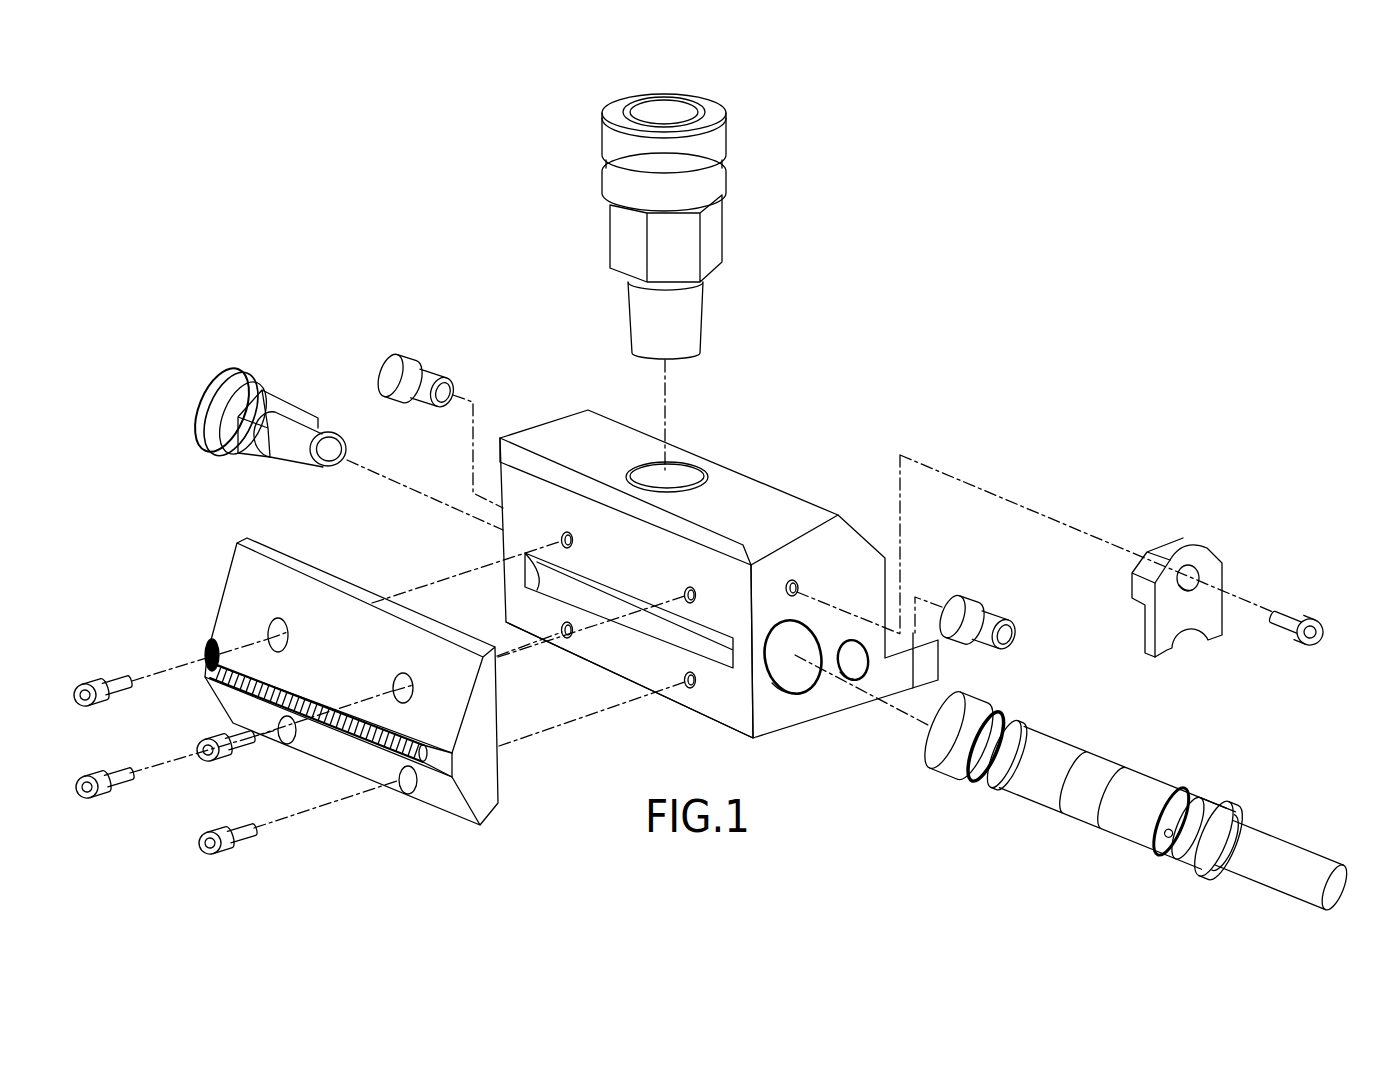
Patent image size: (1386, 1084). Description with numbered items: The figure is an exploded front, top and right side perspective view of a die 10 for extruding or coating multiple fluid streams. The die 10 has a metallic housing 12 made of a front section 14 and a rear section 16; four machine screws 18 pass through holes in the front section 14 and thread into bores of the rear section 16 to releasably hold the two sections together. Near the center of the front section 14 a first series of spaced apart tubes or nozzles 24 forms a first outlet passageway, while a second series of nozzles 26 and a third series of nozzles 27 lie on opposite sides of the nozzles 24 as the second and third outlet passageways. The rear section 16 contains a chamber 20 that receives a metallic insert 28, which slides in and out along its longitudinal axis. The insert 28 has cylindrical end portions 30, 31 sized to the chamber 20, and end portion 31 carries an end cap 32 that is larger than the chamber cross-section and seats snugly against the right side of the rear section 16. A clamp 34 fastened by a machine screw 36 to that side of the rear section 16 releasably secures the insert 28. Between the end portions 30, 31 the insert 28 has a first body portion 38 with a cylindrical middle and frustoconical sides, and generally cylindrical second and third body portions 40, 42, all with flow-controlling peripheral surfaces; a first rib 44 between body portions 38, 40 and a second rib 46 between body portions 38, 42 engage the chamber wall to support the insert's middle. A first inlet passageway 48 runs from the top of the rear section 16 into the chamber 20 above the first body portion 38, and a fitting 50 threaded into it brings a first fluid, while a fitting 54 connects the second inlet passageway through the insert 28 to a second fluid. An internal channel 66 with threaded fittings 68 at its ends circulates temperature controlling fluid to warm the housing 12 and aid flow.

The die 10 is at (926, 311).
The housing 12 is at (788, 484).
The front section 14 is at (487, 805).
The rear section 16 is at (740, 727).
The machine screws 18 is at (112, 763).
The chamber 20 is at (793, 693).
The first series of tubes or nozzles 24 is at (303, 710).
The second series of tubes or nozzles 26 is at (213, 668).
The third series of tubes or nozzles 27 is at (408, 743).
The insert 28 is at (1300, 840).
The end portion 30 is at (988, 700).
The end portion 31 is at (1213, 807).
The end cap 32 is at (1205, 858).
The clamp 34 is at (1145, 632).
The machine screw 36 is at (1295, 638).
The first body portion 38 is at (1047, 795).
The second body portion 40 is at (988, 757).
The third body portion 42 is at (1173, 823).
The first rib 44 is at (1033, 725).
The second rib 46 is at (1190, 793).
The first inlet passageway 48 is at (680, 478).
The fitting 50 is at (718, 228).
The fitting 54 is at (290, 402).
The internal channel 66 is at (847, 667).
The threaded fittings 68 is at (428, 360).